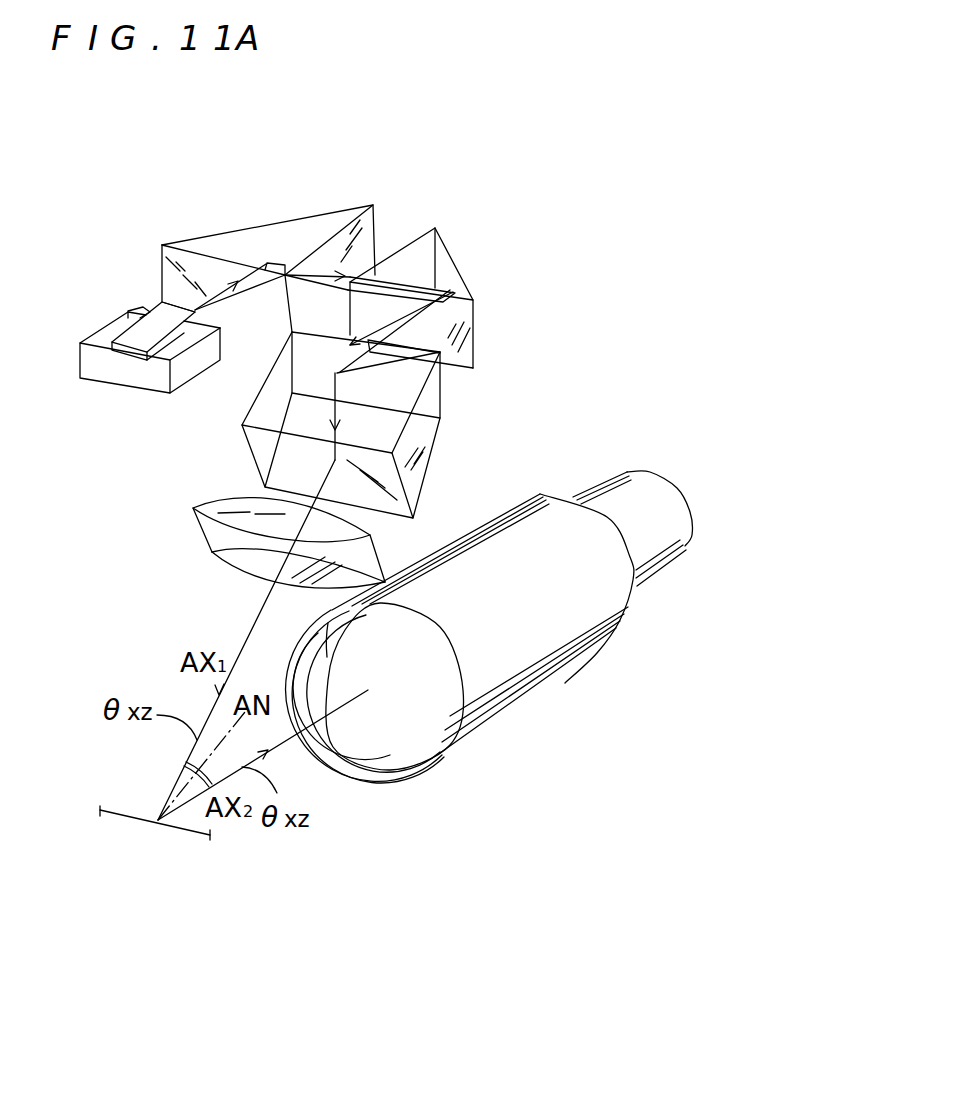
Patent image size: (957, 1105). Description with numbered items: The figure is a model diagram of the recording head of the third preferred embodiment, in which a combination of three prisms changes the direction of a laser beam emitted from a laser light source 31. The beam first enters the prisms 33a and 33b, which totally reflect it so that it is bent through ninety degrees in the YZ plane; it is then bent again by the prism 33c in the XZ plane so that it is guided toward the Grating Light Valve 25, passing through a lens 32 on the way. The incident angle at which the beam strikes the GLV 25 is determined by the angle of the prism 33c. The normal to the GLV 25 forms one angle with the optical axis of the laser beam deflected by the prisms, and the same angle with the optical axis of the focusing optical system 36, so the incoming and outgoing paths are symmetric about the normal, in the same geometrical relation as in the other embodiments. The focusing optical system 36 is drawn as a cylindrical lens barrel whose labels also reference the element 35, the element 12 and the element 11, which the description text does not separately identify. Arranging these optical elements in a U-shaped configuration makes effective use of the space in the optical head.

The laser light source 31 is at (132, 319).
The lens 32 is at (206, 523).
The prism 33a is at (333, 213).
The prism 33b is at (440, 236).
The prism 33c is at (443, 400).
The objective lens 35 is at (395, 686).
The focusing optical system 36 is at (464, 660).
The optical recording medium 12 is at (690, 541).
The optical disk 11 is at (678, 485).
The Grating Light Valve 25 is at (180, 838).